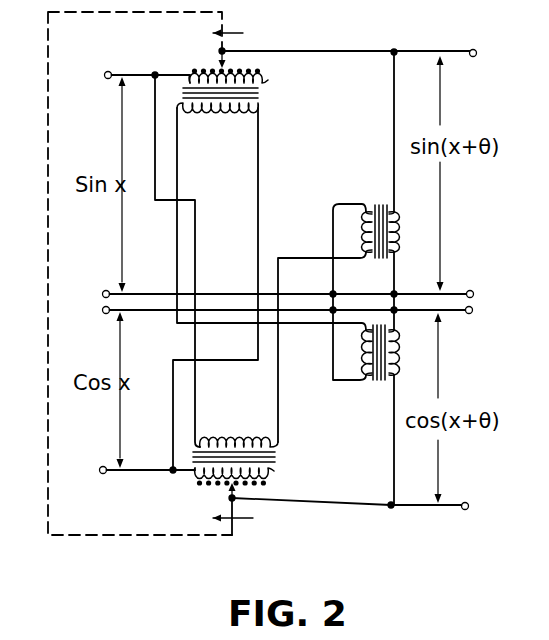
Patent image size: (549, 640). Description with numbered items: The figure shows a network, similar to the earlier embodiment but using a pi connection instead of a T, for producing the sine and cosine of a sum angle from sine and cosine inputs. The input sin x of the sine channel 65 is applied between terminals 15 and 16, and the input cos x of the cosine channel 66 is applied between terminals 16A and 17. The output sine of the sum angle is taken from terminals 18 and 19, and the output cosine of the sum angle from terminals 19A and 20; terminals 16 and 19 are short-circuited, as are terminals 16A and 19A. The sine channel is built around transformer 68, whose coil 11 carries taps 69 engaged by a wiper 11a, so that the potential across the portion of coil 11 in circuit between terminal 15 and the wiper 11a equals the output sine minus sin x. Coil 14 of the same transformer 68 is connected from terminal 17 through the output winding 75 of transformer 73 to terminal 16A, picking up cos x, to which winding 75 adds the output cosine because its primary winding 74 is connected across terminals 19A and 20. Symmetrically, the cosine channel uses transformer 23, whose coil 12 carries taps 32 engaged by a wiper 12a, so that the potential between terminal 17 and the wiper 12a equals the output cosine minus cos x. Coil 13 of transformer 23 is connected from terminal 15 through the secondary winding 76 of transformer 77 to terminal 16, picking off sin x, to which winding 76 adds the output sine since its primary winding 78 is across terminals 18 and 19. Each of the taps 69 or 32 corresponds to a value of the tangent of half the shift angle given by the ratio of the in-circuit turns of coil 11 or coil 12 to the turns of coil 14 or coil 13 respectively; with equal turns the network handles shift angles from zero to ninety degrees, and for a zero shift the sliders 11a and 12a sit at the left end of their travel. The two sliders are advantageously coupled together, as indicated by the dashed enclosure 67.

The coil 11 is at (268, 80).
The wiper 11a is at (244, 51).
The coil 12 is at (274, 471).
The wiper 12a is at (262, 490).
The coil 13 is at (268, 442).
The coil 14 is at (262, 113).
The terminal 15 is at (108, 72).
The terminal 16 is at (106, 290).
The terminal 16A is at (104, 313).
The terminal 17 is at (103, 466).
The terminal 18 is at (476, 50).
The terminal 19 is at (473, 291).
The terminal 19A is at (472, 310).
The terminal 20 is at (467, 503).
The transformer 23 is at (280, 454).
The taps 32 is at (213, 485).
The sine channel 65 is at (152, 144).
The cosine channel 66 is at (162, 359).
The coupling 67 is at (48, 212).
The transformer 68 is at (262, 93).
The taps 69 is at (212, 70).
The transformer 73 is at (378, 381).
The primary winding 74 is at (400, 345).
The output winding 75 is at (360, 360).
The secondary winding 76 is at (360, 227).
The transformer 77 is at (379, 204).
The primary winding 78 is at (420, 218).